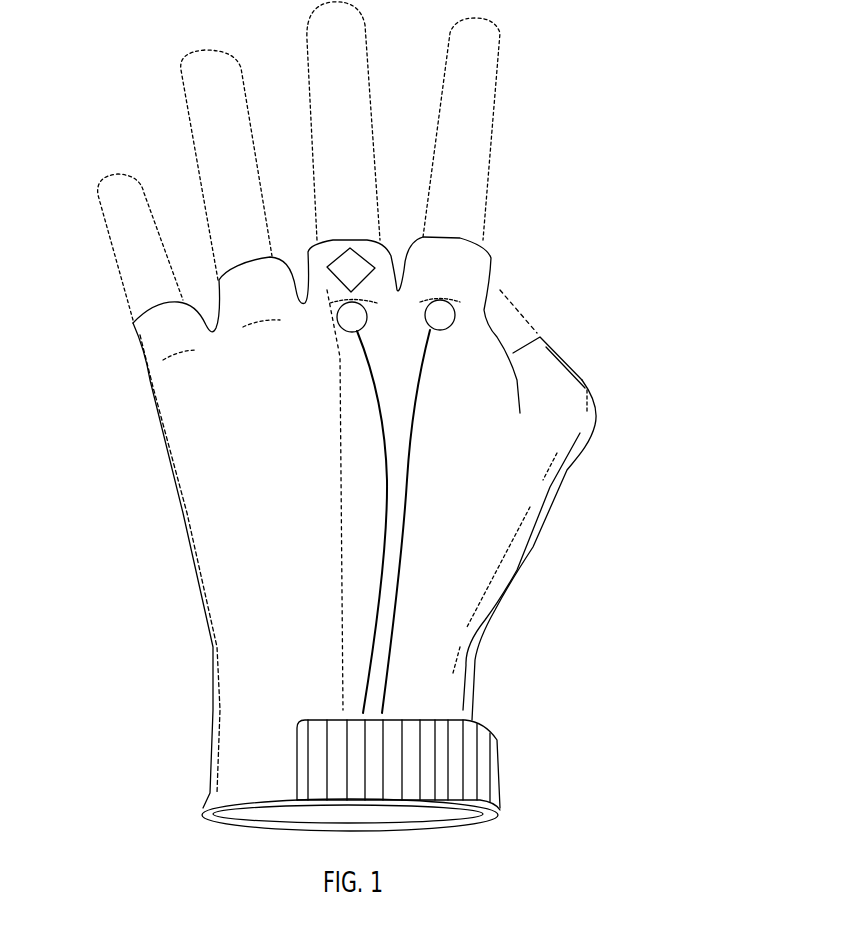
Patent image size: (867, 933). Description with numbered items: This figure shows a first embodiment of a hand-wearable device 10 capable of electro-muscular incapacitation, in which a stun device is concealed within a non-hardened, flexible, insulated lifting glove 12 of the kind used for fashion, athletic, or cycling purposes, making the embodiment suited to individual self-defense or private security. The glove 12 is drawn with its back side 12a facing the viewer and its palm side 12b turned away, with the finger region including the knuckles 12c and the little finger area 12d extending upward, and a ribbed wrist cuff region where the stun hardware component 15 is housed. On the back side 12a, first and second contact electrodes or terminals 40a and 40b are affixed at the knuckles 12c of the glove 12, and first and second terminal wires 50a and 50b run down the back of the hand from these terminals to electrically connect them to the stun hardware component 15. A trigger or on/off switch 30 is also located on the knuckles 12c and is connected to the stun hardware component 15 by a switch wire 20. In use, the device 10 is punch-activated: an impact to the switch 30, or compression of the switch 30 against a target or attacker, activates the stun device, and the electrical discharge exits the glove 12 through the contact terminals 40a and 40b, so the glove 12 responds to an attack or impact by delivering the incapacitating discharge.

The hand-wearable device 10 is at (691, 141).
The glove 12 is at (210, 787).
The back side 12a is at (300, 472).
The palm side 12b is at (518, 657).
The knuckles 12c is at (150, 361).
The little finger portion 12d is at (100, 180).
The stun hardware component 15 is at (535, 821).
The switch wire 20 is at (298, 592).
The switch 30 is at (327, 209).
The first contact electrode 40a is at (511, 290).
The second contact electrode 40b is at (316, 341).
The first terminal wire 50a is at (427, 415).
The second terminal wire 50b is at (421, 506).